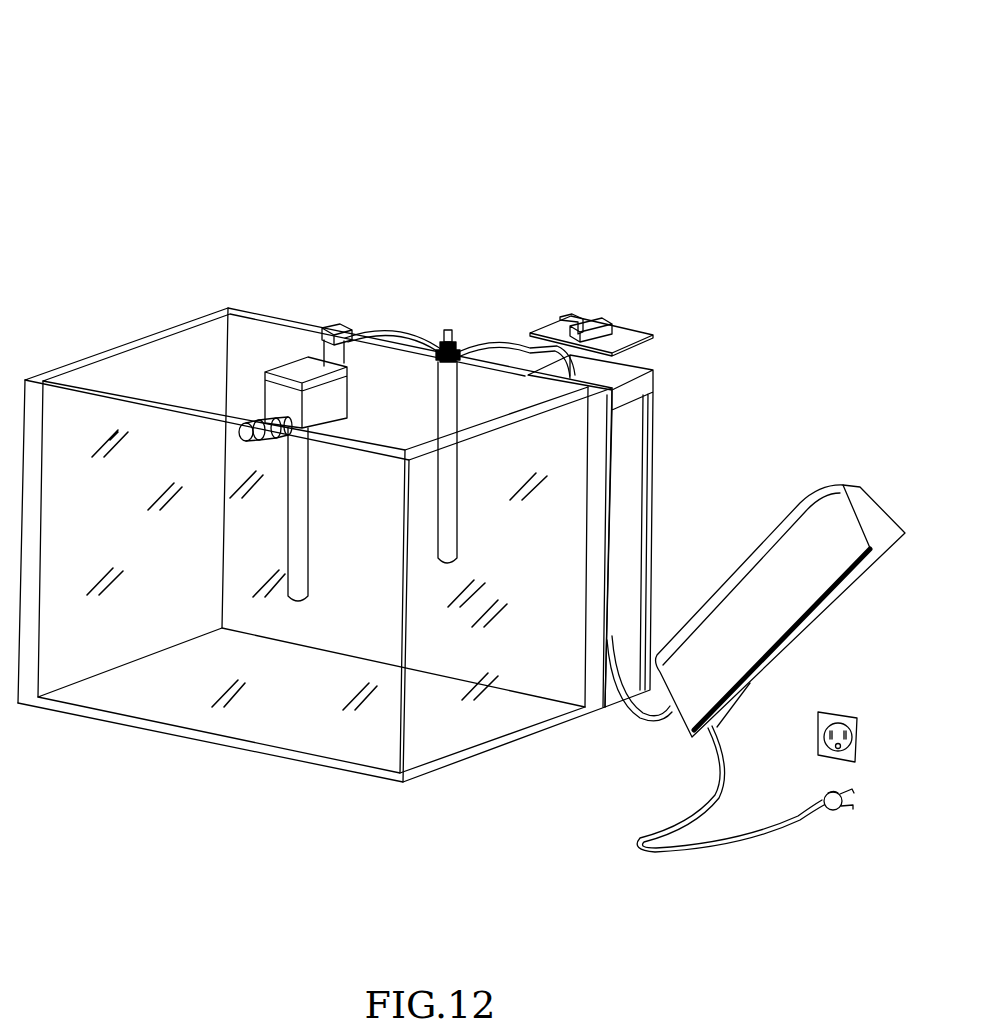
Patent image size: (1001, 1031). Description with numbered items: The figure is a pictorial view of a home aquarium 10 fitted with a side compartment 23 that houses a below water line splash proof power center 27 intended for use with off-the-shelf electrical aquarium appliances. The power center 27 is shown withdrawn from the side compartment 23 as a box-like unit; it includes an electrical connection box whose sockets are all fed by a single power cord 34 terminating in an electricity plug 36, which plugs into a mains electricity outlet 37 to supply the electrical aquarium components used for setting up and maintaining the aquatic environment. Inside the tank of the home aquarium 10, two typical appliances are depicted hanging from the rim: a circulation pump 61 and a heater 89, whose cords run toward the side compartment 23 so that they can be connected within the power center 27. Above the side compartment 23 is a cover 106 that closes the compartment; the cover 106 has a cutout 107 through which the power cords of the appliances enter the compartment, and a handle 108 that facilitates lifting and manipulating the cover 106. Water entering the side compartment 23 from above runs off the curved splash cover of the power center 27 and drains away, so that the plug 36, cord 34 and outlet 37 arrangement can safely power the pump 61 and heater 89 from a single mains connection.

The home aquarium 10 is at (195, 138).
The side compartment 23 is at (692, 320).
The power center 27 is at (808, 492).
The power cord 34 is at (743, 843).
The electricity plug 36 is at (842, 815).
The mains electricity outlet 37 is at (833, 712).
The circulation pump 61 is at (324, 303).
The heater 89 is at (445, 328).
The cover 106 is at (627, 337).
The cutout 107 is at (558, 330).
The handle 108 is at (610, 316).